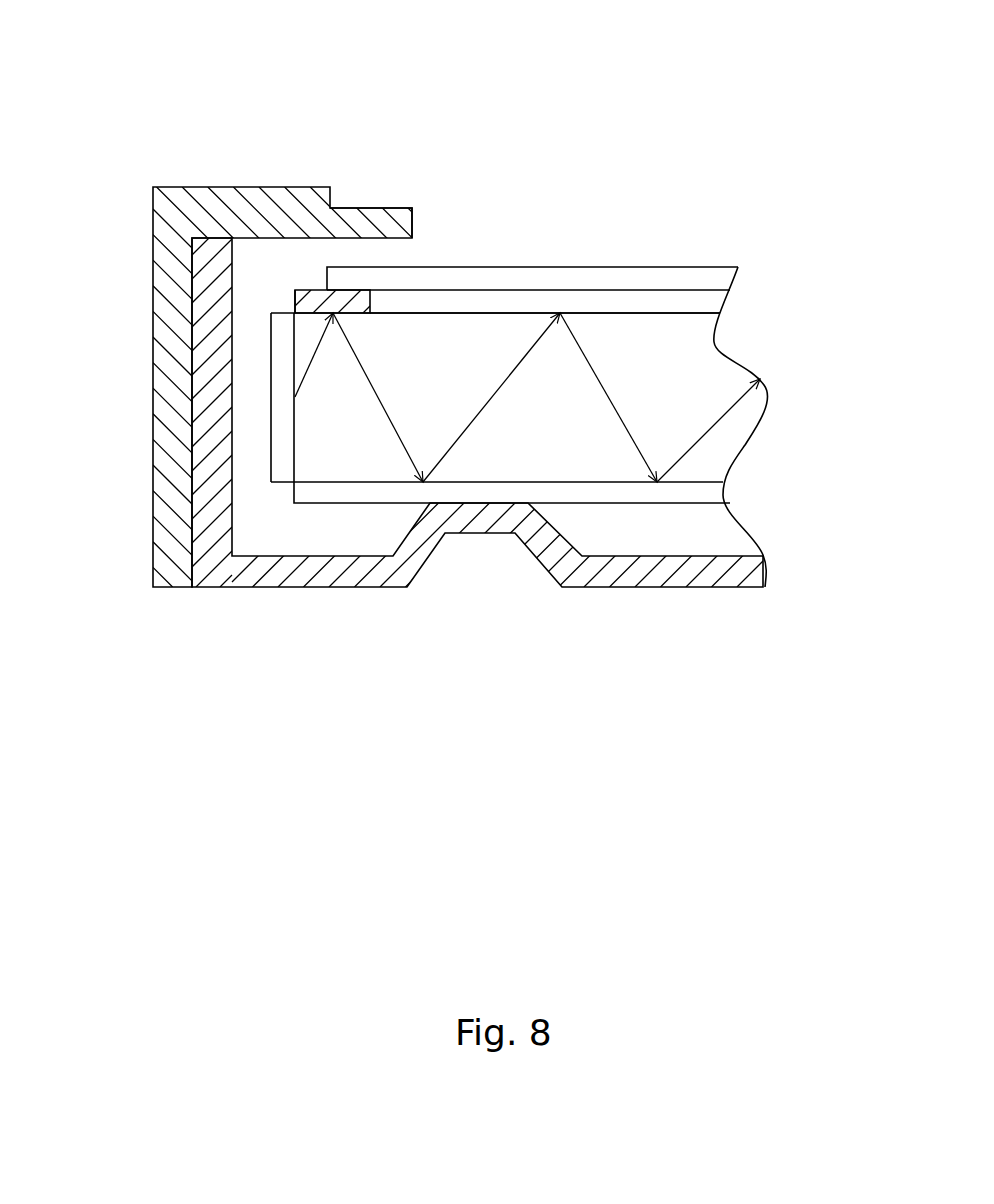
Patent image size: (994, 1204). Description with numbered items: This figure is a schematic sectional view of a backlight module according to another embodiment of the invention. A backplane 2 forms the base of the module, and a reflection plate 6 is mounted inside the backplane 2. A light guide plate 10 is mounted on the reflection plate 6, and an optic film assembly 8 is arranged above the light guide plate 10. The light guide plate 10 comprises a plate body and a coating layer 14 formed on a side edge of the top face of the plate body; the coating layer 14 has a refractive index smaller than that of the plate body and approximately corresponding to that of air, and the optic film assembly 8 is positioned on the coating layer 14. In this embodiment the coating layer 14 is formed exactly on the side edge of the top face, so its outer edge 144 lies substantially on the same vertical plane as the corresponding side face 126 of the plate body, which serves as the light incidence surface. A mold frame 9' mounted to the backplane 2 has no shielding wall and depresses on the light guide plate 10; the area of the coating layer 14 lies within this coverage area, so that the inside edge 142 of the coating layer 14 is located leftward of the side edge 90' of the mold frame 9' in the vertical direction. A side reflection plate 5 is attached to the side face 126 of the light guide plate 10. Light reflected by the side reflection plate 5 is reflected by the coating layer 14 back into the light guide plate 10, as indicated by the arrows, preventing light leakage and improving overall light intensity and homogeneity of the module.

The mold frame 9' is at (266, 304).
The side edge of the mold frame 90' is at (415, 172).
The coating layer 14 is at (335, 291).
The outer edge of the coating layer 144 is at (296, 298).
The inside edge of the coating layer 142 is at (392, 306).
The optic film assembly 8 is at (565, 285).
The light guide plate 10 is at (710, 368).
The side face 126 is at (293, 428).
The side reflection plate 5 is at (280, 463).
The reflection plate 6 is at (598, 495).
The backplane 2 is at (360, 577).